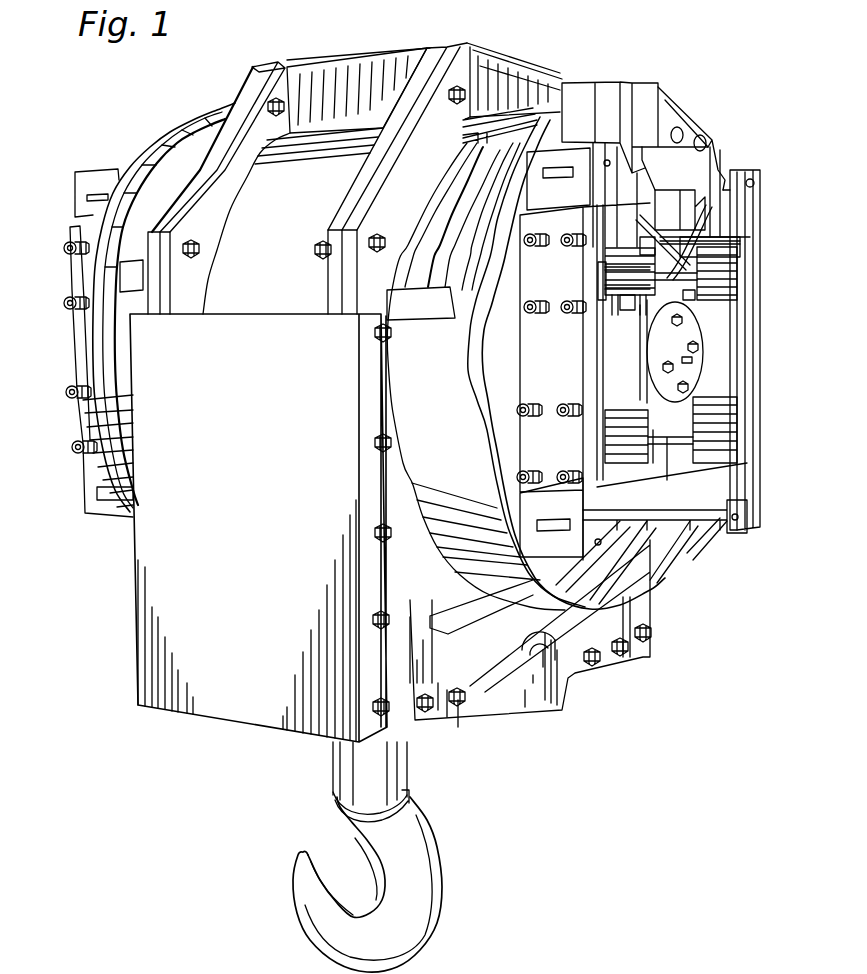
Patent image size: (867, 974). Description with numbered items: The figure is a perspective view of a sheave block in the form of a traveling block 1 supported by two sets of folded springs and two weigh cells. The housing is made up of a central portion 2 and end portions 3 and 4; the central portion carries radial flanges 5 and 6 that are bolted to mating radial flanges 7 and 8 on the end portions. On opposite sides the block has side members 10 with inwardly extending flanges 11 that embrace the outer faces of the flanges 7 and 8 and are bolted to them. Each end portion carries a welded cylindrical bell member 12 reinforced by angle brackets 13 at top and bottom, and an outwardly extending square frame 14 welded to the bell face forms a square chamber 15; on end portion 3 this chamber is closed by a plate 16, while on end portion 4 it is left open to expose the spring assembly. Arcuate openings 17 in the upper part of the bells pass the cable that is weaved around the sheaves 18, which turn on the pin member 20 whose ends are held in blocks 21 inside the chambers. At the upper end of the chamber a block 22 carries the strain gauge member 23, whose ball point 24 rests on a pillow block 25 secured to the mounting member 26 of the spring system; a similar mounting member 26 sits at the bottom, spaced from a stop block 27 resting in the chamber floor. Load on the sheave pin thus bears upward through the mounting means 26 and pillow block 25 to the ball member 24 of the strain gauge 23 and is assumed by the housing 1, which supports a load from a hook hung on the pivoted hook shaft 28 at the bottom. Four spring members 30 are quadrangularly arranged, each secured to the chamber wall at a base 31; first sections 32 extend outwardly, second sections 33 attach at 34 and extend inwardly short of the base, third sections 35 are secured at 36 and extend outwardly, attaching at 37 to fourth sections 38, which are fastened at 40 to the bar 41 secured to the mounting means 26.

The traveling block 1 is at (242, 471).
The central portion 2 is at (272, 240).
The end portion 3 is at (160, 133).
The end portion 4 is at (430, 118).
The radial flange 5 is at (180, 292).
The radial flange 6 is at (330, 285).
The mating radial flange 7 is at (187, 182).
The mating radial flange 8 is at (357, 207).
The side member 10 is at (270, 530).
The inwardly extending flange 11 is at (368, 572).
The cylindrical bell member 12 is at (113, 358).
The reinforcing angle bracket 13 is at (224, 103).
The square frame 14 is at (87, 177).
The square chamber 15 is at (733, 378).
The plate 16 is at (75, 193).
The arcuate opening 17 is at (127, 275).
The sheave 18 is at (167, 197).
The pin member 20 is at (697, 360).
The block 21 is at (648, 383).
The block 22 is at (672, 163).
The strain gauge member 23 is at (670, 217).
The ball point 24 is at (665, 237).
The pillow block 25 is at (740, 245).
The mounting member 26 is at (690, 288).
The stop block 27 is at (667, 473).
The pivoted hook shaft 28 is at (418, 882).
The spring member 30 is at (618, 235).
The base 31 is at (603, 232).
The first section 32 is at (620, 315).
The second section 33 is at (628, 330).
The attachment point 34 is at (648, 315).
The third section 35 is at (630, 287).
The attachment point 36 is at (610, 293).
The attachment point 37 is at (670, 262).
The fourth section 38 is at (695, 300).
The attachment point 40 is at (610, 270).
The bar 41 is at (645, 237).